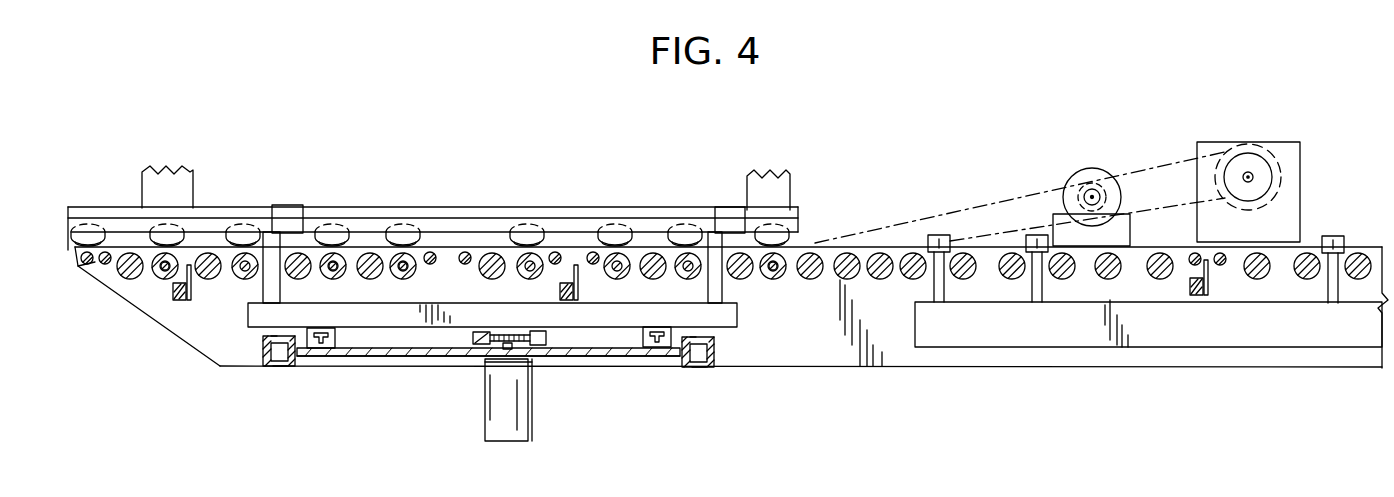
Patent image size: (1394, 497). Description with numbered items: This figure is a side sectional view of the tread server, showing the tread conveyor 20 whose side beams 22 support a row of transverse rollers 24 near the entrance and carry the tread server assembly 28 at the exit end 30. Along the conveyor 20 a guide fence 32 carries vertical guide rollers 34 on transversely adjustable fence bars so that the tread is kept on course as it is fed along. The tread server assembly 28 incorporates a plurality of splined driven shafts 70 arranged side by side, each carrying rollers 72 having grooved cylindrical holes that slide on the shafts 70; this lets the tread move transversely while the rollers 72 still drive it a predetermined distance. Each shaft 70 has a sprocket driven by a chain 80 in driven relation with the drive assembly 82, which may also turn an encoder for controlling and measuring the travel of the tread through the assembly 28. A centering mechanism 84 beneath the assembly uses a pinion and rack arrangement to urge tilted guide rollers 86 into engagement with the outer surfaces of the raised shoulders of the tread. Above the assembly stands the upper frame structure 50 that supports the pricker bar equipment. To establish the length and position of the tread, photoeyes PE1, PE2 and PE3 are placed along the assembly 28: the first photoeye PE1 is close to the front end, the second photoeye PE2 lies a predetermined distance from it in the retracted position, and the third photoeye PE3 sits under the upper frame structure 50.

The tread conveyor 20 is at (1354, 376).
The side beams 22 is at (1302, 362).
The transverse rollers 24 is at (1308, 253).
The tread server assembly 28 is at (378, 198).
The exit end 30 is at (88, 266).
The guide fence 32 is at (992, 338).
The vertical guide rollers 34 is at (939, 235).
The upper frame structure 50 is at (785, 182).
The splined driven shafts 70 is at (240, 278).
The rollers 72 is at (157, 270).
The chain 80 is at (993, 203).
The drive assembly 82 is at (1288, 133).
The centering mechanism 84 is at (552, 378).
The tilted guide rollers 86 is at (167, 233).
The photoeye PE1 is at (165, 330).
The photoeye PE2 is at (1217, 287).
The photoeye PE3 is at (582, 283).